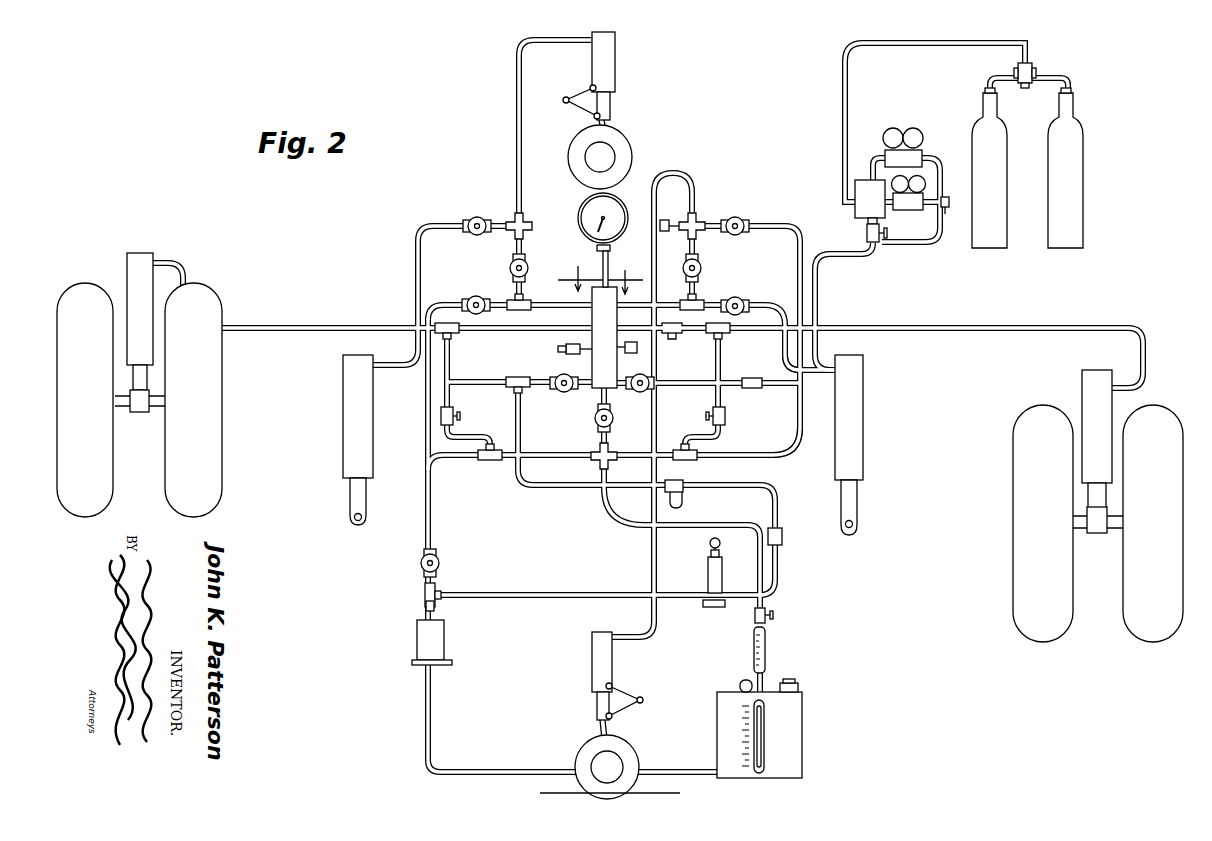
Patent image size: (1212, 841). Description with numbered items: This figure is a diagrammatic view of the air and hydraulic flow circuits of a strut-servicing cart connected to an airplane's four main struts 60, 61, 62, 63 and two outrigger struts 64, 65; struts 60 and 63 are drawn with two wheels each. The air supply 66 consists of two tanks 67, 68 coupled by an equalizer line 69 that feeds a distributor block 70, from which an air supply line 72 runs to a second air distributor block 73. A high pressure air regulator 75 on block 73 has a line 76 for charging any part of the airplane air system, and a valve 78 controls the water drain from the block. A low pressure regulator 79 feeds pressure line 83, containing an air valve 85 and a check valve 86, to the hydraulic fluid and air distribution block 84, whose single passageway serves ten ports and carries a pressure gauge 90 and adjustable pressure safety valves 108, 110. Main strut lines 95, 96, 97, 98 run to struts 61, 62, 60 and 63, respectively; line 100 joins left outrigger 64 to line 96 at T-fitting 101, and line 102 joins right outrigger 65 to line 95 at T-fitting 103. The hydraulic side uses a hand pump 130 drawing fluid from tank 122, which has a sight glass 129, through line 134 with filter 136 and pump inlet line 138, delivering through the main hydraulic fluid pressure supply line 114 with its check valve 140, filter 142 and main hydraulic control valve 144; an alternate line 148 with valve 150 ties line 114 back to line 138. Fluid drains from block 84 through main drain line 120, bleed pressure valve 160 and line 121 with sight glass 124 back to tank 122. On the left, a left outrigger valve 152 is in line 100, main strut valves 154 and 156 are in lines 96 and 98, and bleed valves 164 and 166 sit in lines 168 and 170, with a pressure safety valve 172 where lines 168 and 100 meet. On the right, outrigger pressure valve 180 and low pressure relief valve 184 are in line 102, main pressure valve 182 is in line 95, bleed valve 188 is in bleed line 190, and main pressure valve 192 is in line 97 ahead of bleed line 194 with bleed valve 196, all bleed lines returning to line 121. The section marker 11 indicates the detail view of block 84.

The section line 11- 11 is at (602, 268).
The main strut 60 is at (1090, 388).
The main strut 61 is at (855, 410).
The main strut 62 is at (352, 403).
The main strut 63 is at (128, 305).
The outrigger strut 64 is at (609, 70).
The outrigger strut 65 is at (603, 663).
The air supply 66 is at (1078, 206).
The tank 67 is at (1075, 145).
The tank 68 is at (992, 214).
The equalizer line 69 is at (1047, 83).
The distributor block 70 is at (1017, 70).
The air supply line 72 is at (848, 75).
The air distributor block 73 is at (865, 187).
The high pressure air regulator 75 is at (910, 204).
The line 76 is at (946, 210).
The valve 78 is at (872, 242).
The low pressure regulator 79 is at (908, 155).
The pressure line 83 is at (820, 297).
The hydraulic fluid and air distribution block 84 is at (607, 369).
The air valve 85 is at (652, 390).
The check valve 86 is at (800, 385).
The pressure gauge 90 is at (613, 208).
The main strut line 95 is at (638, 303).
The main strut line 96 is at (542, 303).
The strut line 97 is at (642, 331).
The main strut line 98 is at (563, 327).
The line 100 is at (515, 118).
The T-fitting 101 is at (515, 303).
The line 102 is at (641, 280).
The T-fitting 103 is at (702, 302).
The adjustable pressure safety valve 108 is at (637, 350).
The adjustable pressure safety valve 110 is at (568, 347).
The main hydraulic fluid pressure supply line 114 is at (773, 495).
The main drain line 120 is at (608, 407).
The line 121 is at (618, 517).
The tank 122 is at (792, 747).
The sight glass 124 is at (767, 650).
The sight glass 129 is at (763, 718).
The hand pump 130 is at (712, 573).
The line 134 is at (433, 725).
The filter 136 is at (445, 640).
The pump inlet line 138 is at (550, 593).
The check valve 140 is at (782, 533).
The filter 142 is at (683, 500).
The main hydraulic control valve 144 is at (570, 388).
The alternate line 148 is at (435, 502).
The valve 150 is at (440, 560).
The left outrigger valve 152 is at (527, 267).
The main strut valve 154 is at (470, 300).
The main strut valve 156 is at (512, 333).
The bleed pressure valve 160 is at (608, 430).
The bleed valve 164 is at (472, 215).
The bleed valve 166 is at (455, 410).
The line 168 is at (412, 249).
The line 170 is at (449, 364).
The pressure safety valve 172 is at (534, 214).
The outrigger pressure valve 180 is at (700, 267).
The main pressure valve 182 is at (742, 302).
The low pressure relief valve 184 is at (669, 213).
The bleed valve 188 is at (737, 215).
The bleed line 190 is at (777, 227).
The main pressure valve 192 is at (720, 333).
The bleed line 194 is at (723, 390).
The bleed valve 196 is at (723, 420).